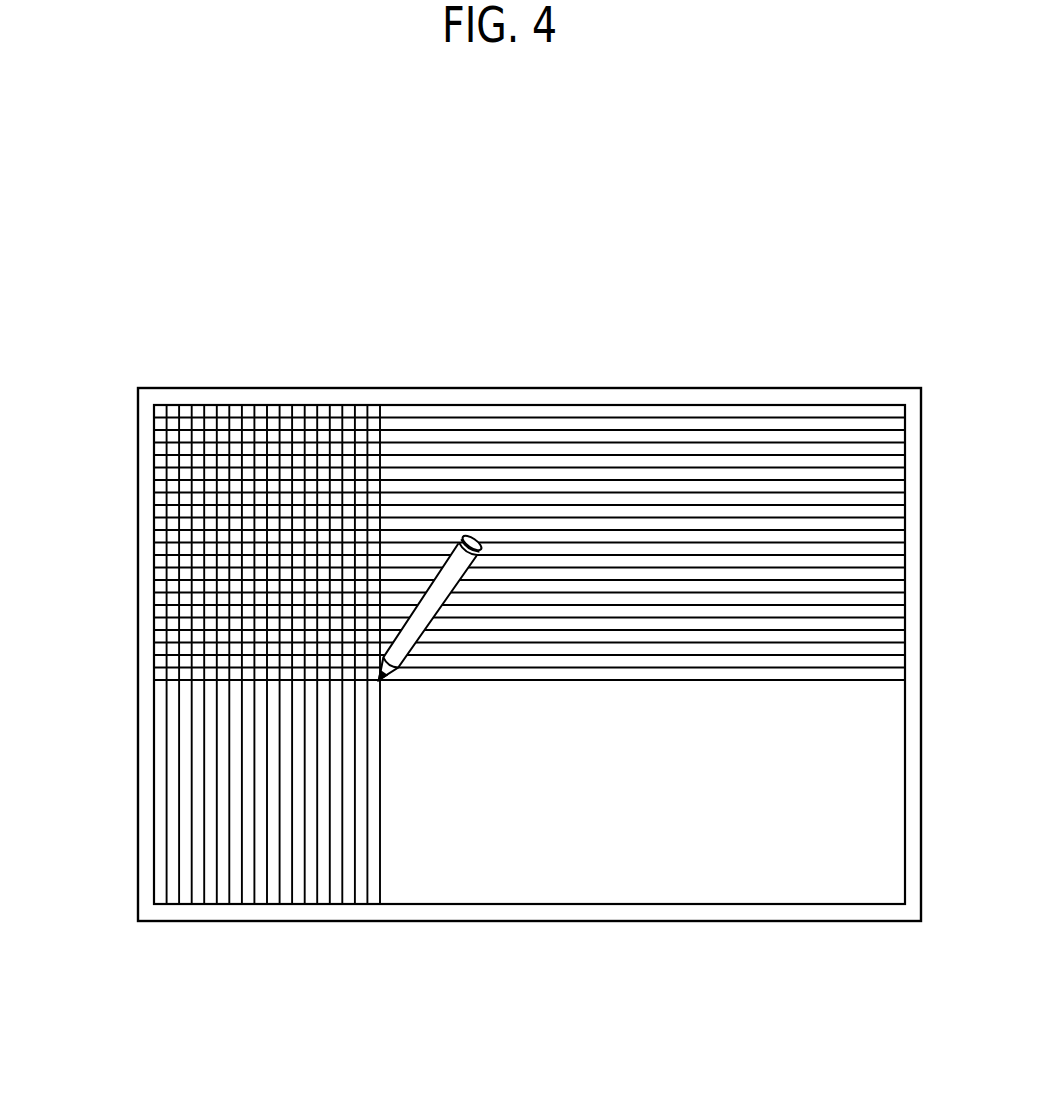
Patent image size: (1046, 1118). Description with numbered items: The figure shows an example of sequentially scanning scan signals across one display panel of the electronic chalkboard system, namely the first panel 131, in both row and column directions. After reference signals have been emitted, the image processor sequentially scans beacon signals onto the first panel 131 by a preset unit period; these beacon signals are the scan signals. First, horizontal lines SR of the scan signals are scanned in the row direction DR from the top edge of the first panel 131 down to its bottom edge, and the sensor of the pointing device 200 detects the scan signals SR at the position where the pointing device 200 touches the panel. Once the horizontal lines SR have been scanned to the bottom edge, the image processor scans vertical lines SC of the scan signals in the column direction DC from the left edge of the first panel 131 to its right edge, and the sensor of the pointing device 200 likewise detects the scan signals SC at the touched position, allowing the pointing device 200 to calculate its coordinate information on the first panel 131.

The first panel 131 is at (137, 371).
The pointing device 200 is at (437, 587).
The horizontal lines of scan signals SR is at (645, 517).
The vertical lines of scan signals SC is at (215, 795).
The column direction DC is at (377, 367).
The row direction DR is at (112, 598).